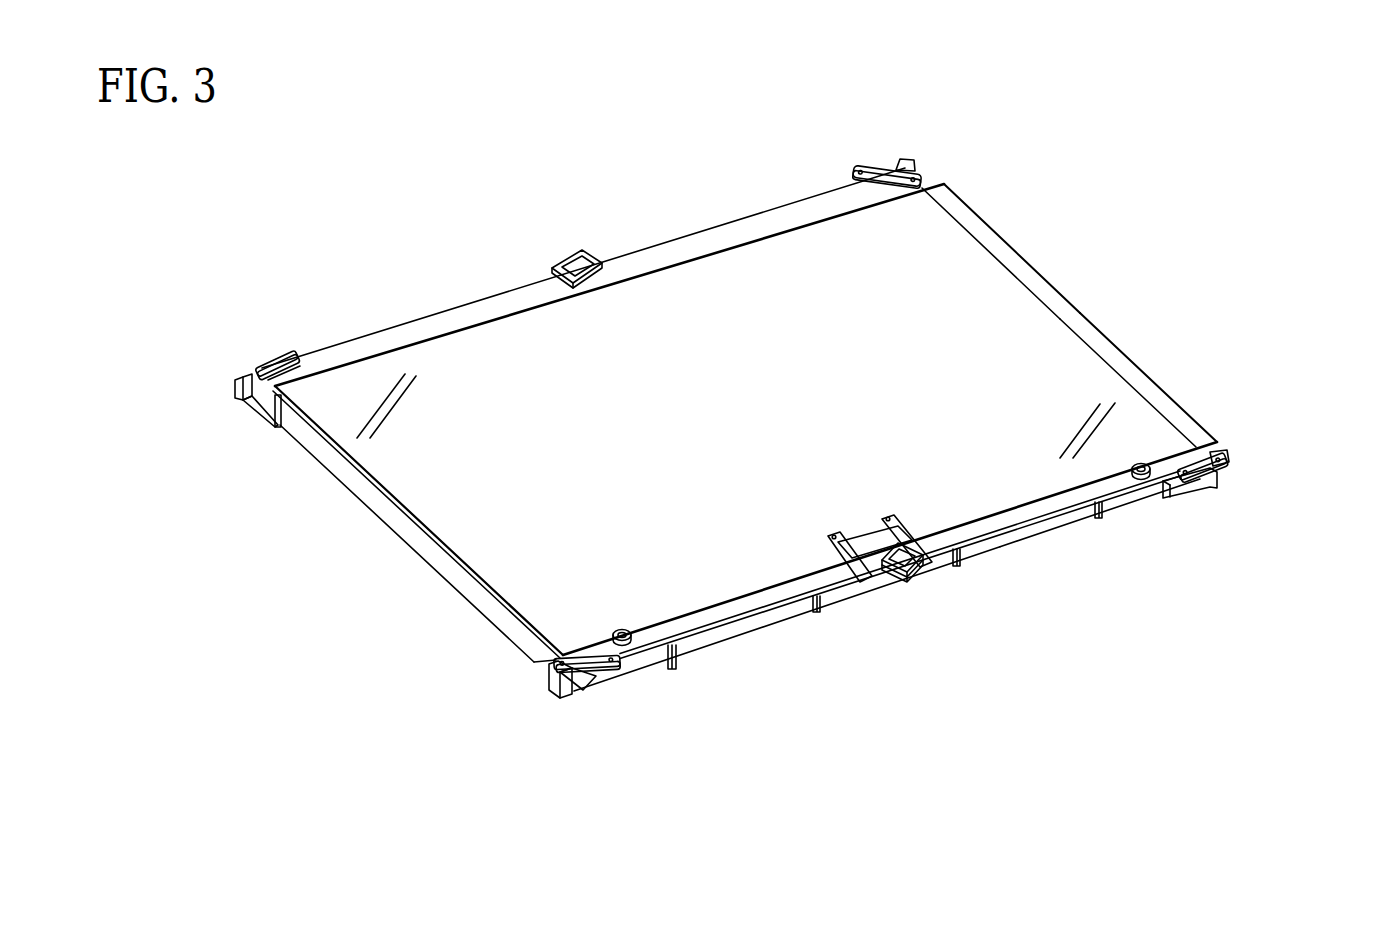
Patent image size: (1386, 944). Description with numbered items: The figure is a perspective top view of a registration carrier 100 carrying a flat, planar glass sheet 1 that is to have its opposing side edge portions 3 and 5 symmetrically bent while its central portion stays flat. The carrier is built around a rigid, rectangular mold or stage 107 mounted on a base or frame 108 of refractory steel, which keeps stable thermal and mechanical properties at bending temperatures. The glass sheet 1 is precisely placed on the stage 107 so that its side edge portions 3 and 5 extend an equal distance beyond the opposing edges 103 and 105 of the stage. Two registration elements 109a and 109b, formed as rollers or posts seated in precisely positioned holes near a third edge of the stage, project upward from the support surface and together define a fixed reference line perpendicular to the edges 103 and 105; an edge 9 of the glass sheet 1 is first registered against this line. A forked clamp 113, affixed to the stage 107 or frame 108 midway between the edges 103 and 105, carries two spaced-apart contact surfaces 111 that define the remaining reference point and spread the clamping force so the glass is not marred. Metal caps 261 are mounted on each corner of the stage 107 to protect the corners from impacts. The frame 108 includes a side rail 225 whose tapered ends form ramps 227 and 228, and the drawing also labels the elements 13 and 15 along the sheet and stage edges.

The glass sheet 1 is at (1041, 269).
The side edge portion 3 is at (447, 570).
The side edge portion 5 is at (1091, 332).
The edge of the glass sheet 9 is at (1046, 496).
The frame rail edge 13 is at (507, 637).
The frame rail edge 15 is at (986, 222).
The registration carrier 100 is at (481, 222).
The edge of the stage 103 is at (400, 508).
The edge of the stage 105 is at (1132, 376).
The stage 107 is at (708, 291).
The frame 108 is at (852, 606).
The registration element 109a is at (630, 640).
The registration element 109b is at (1140, 477).
The contact surface 111 is at (832, 548).
The clamp 113 is at (948, 538).
The side rail 225 is at (1050, 532).
The ramp 227 is at (1198, 488).
The ramp 228 is at (285, 428).
The metal cap 261 is at (901, 160).